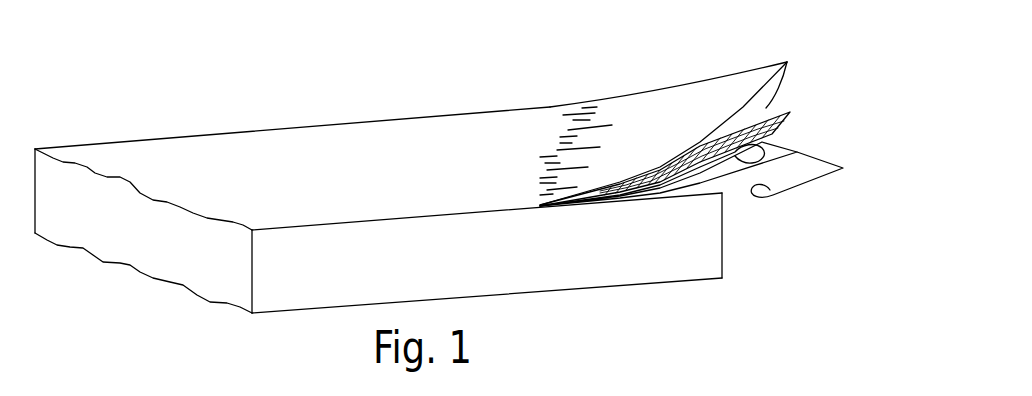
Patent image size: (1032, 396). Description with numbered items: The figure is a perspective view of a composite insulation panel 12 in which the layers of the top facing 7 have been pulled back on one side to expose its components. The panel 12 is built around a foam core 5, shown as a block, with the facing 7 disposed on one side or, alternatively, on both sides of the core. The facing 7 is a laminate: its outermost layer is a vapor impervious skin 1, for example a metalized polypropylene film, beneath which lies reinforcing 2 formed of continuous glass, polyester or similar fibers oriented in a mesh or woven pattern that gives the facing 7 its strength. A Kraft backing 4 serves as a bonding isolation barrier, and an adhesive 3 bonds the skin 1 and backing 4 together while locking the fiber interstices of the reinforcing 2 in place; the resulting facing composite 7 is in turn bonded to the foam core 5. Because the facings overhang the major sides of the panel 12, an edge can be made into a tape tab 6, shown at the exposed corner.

The vapor impervious skin 1 is at (786, 58).
The reinforcing 2 is at (780, 106).
The adhesive 3 is at (787, 135).
The backing 4 is at (782, 155).
The foam core 5 is at (722, 239).
The tape tab 6 is at (826, 172).
The facing 7 is at (850, 26).
The composite insulation panel 12 is at (338, 102).